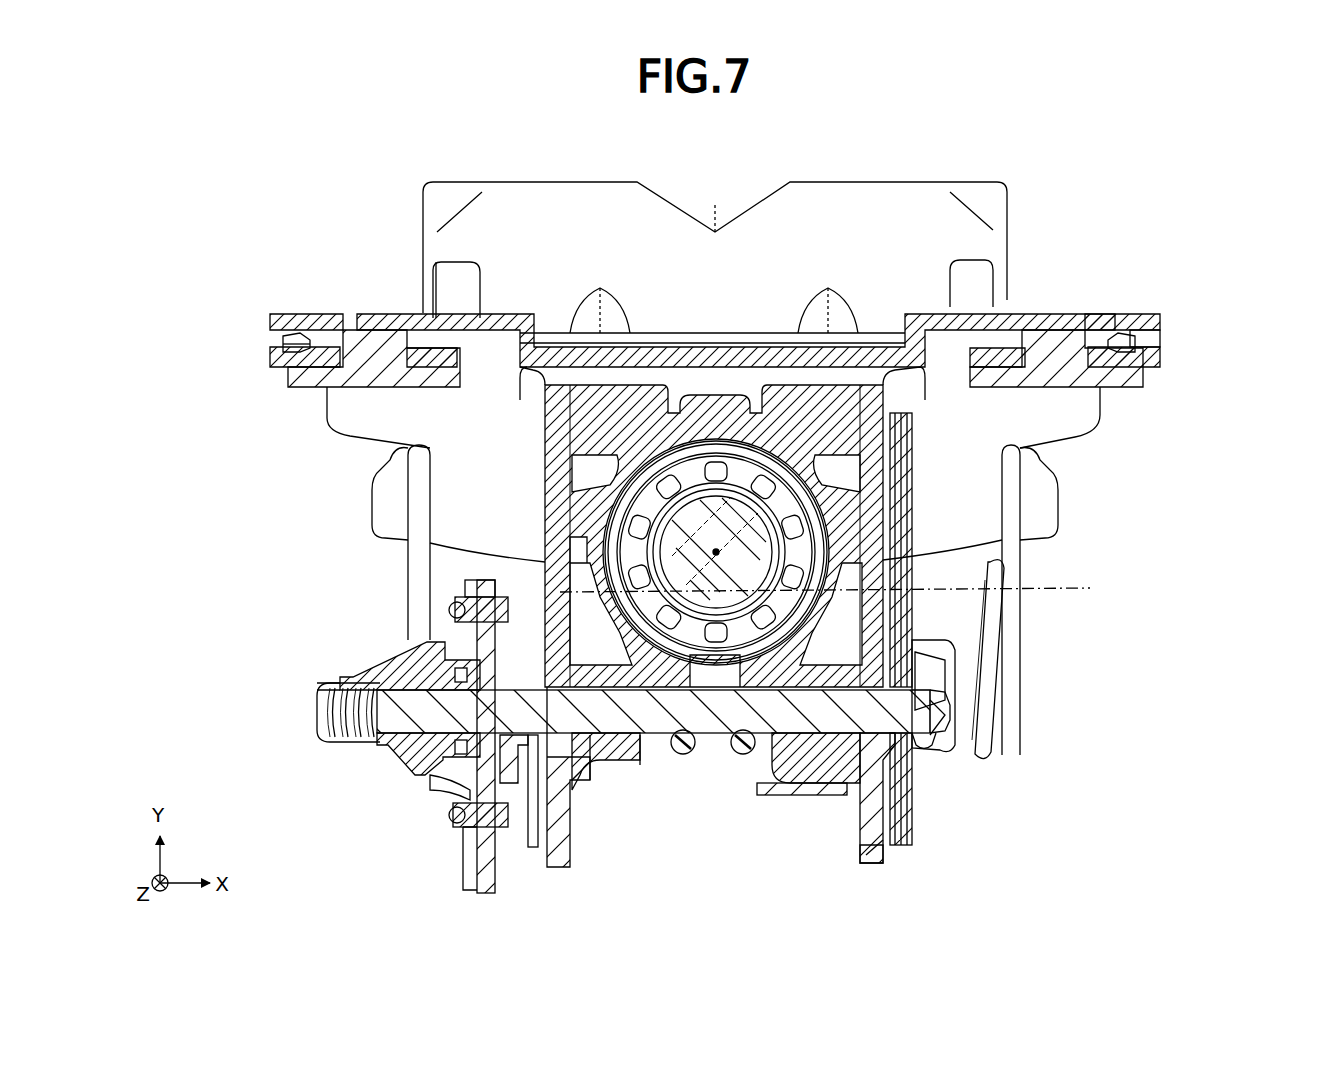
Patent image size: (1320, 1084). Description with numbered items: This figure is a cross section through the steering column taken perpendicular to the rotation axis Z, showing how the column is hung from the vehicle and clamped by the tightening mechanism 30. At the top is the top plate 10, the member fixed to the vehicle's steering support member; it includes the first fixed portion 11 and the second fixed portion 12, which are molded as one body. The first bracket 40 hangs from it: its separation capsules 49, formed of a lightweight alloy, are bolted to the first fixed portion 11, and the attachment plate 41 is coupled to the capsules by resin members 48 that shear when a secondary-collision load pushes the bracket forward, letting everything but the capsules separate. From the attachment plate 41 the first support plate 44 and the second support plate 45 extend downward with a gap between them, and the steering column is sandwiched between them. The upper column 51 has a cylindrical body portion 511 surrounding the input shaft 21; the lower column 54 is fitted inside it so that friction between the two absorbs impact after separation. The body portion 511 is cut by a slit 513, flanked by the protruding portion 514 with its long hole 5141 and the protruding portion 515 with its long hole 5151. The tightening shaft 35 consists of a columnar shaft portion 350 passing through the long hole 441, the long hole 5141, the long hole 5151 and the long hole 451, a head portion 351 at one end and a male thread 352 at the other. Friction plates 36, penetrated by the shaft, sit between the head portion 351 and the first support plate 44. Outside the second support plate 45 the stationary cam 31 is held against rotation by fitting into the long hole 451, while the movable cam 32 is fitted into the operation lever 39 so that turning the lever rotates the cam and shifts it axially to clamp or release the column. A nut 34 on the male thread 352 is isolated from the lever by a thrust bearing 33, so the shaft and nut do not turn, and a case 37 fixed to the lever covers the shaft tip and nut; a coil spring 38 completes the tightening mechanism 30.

The top plate 10 is at (807, 238).
The first fixed portion 11 is at (1118, 314).
The second fixed portion 12 is at (892, 200).
The input shaft 21 is at (768, 592).
The tightening mechanism 30 is at (342, 810).
The stationary cam 31 is at (556, 840).
The movable cam 32 is at (517, 840).
The thrust bearing 33 is at (465, 760).
The nut 34 is at (440, 785).
The tightening shaft 35 is at (960, 703).
The head portion 351 is at (922, 750).
The male thread 352 is at (390, 748).
The friction plates 36 is at (912, 810).
The case 37 is at (363, 677).
The coil spring 38 is at (318, 710).
The operation lever 39 is at (460, 830).
The first bracket 40 is at (1180, 368).
The attachment plate 41 is at (782, 345).
The first support plate 44 is at (885, 860).
The long hole 441 is at (866, 850).
The second support plate 45 is at (540, 850).
The long hole 451 is at (545, 780).
The resin members 48 is at (283, 342).
The separation capsules 49 is at (365, 370).
The upper column 51 is at (830, 490).
The body portion 511 is at (800, 632).
The slit 513 is at (735, 752).
The protruding portion 514 is at (775, 785).
The long hole 5141 is at (822, 797).
The protruding portion 515 is at (625, 748).
The long hole 5151 is at (598, 750).
The lower column 54 is at (812, 553).
The shaft portion 350 is at (680, 758).
The rotation axis Z is at (836, 586).